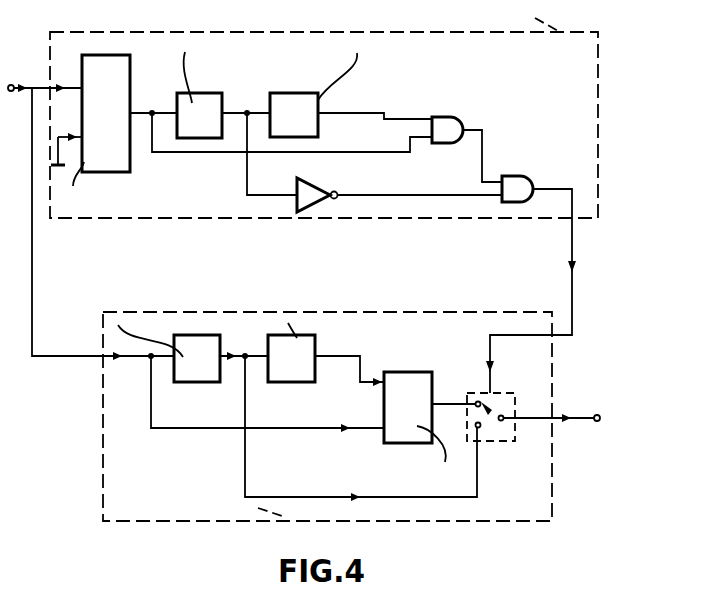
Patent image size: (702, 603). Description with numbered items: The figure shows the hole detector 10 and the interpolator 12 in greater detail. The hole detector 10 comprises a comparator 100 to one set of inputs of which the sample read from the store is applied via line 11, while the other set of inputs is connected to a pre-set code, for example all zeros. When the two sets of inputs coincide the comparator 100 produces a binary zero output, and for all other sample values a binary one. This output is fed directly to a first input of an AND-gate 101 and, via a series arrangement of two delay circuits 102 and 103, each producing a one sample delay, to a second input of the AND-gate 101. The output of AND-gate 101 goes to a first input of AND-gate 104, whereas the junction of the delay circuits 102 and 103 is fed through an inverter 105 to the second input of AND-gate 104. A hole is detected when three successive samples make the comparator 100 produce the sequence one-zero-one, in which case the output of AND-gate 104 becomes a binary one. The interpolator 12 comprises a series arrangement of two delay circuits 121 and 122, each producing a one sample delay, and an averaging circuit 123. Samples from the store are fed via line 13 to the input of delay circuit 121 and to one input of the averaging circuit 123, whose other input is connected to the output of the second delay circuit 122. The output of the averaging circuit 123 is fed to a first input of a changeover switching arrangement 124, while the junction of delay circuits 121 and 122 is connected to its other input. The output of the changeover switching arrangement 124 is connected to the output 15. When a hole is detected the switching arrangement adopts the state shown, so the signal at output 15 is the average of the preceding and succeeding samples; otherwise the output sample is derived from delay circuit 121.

The hole detector 10 is at (318, 32).
The line 11 is at (43, 83).
The interpolator 12 is at (300, 312).
The line 13 is at (62, 357).
The output 15 is at (563, 418).
The comparator 100 is at (132, 76).
The AND-gate 101 is at (450, 117).
The delay circuit 102 is at (200, 93).
The delay circuit 103 is at (299, 93).
The AND-gate 104 is at (520, 176).
The inverter 105 is at (314, 185).
The delay circuit 121 is at (183, 383).
The delay circuit 122 is at (291, 383).
The averaging circuit 123 is at (404, 372).
The changeover switching arrangement 124 is at (498, 441).